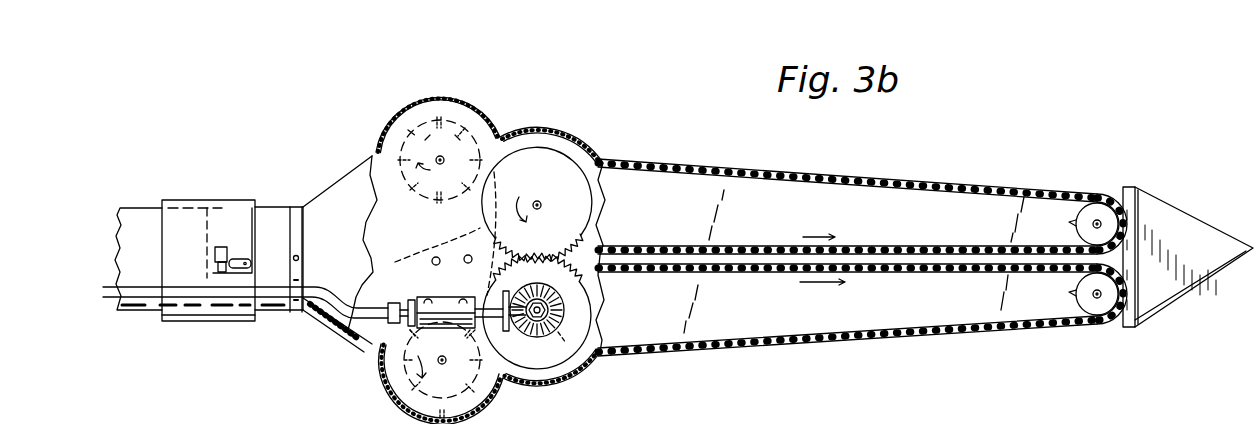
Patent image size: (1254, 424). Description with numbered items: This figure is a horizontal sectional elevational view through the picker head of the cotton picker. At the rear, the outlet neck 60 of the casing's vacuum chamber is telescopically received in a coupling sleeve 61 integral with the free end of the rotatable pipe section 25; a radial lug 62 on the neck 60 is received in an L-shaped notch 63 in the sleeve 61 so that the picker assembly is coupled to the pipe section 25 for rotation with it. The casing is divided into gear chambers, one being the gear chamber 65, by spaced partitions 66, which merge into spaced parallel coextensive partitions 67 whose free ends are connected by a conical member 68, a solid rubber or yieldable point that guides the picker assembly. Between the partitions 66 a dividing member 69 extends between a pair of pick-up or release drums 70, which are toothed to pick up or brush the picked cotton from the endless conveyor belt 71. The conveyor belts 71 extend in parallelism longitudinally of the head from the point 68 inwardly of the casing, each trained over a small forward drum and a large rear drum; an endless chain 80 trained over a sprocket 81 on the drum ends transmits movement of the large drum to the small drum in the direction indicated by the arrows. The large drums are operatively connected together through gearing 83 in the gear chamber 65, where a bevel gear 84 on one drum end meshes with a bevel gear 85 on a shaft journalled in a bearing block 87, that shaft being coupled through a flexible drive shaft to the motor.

The rotatable pipe section 25 is at (132, 218).
The coupling sleeve 61 is at (185, 203).
The L-shaped notch 63 is at (240, 248).
The outlet neck 60 is at (268, 212).
The radial lug 62 is at (226, 268).
The gear chamber 65 is at (368, 338).
The pick-up or release drum 70 is at (475, 104).
The dividing member 69 is at (440, 243).
The partition 66 is at (560, 130).
The gearing 83 is at (565, 268).
The bevel gear 84 is at (565, 310).
The bevel gear 85 is at (504, 328).
The bearing block 87 is at (432, 296).
The endless chain 80 is at (833, 175).
The partition 67 is at (950, 203).
The endless conveyor belt 71 is at (707, 364).
The sprocket 81 is at (1092, 208).
The conical member 68 is at (1175, 228).